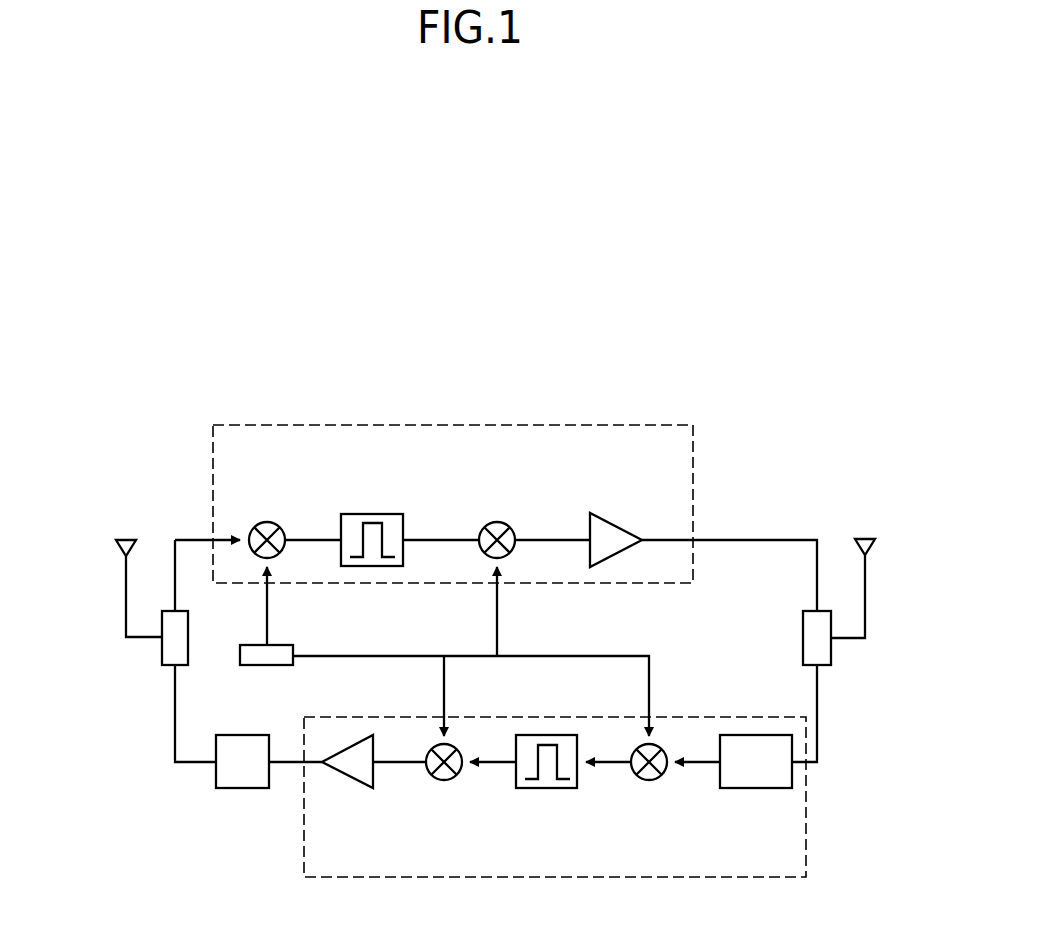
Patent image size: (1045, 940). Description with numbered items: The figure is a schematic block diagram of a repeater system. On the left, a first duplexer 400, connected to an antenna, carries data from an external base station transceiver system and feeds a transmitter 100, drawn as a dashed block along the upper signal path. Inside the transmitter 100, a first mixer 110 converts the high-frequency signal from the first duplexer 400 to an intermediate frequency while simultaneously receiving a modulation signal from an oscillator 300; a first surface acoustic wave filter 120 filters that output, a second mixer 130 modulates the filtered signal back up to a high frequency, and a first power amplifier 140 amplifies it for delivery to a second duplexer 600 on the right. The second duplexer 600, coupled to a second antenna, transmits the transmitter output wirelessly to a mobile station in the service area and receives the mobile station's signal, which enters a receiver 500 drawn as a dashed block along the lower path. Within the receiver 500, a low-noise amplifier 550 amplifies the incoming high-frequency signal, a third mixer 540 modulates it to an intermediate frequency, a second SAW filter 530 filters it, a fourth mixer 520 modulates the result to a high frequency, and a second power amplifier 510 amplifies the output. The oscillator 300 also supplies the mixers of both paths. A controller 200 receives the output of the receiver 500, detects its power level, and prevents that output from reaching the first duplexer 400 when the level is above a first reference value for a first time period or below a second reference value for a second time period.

The transmitter 100 is at (693, 470).
The first mixer 110 is at (266, 522).
The first surface acoustic wave (SAW) filter 120 is at (372, 514).
The second mixer 130 is at (497, 522).
The first power amplifier 140 is at (618, 518).
The controller 200 is at (240, 790).
The oscillator 300 is at (283, 645).
The first duplexer 400 is at (162, 650).
The receiver 500 is at (806, 815).
The second power amplifier 510 is at (353, 776).
The fourth mixer 520 is at (447, 781).
The second SAW filter 530 is at (548, 790).
The third mixer 540 is at (650, 781).
The low-noise amplifier 550 is at (752, 790).
The second duplexer 600 is at (831, 655).